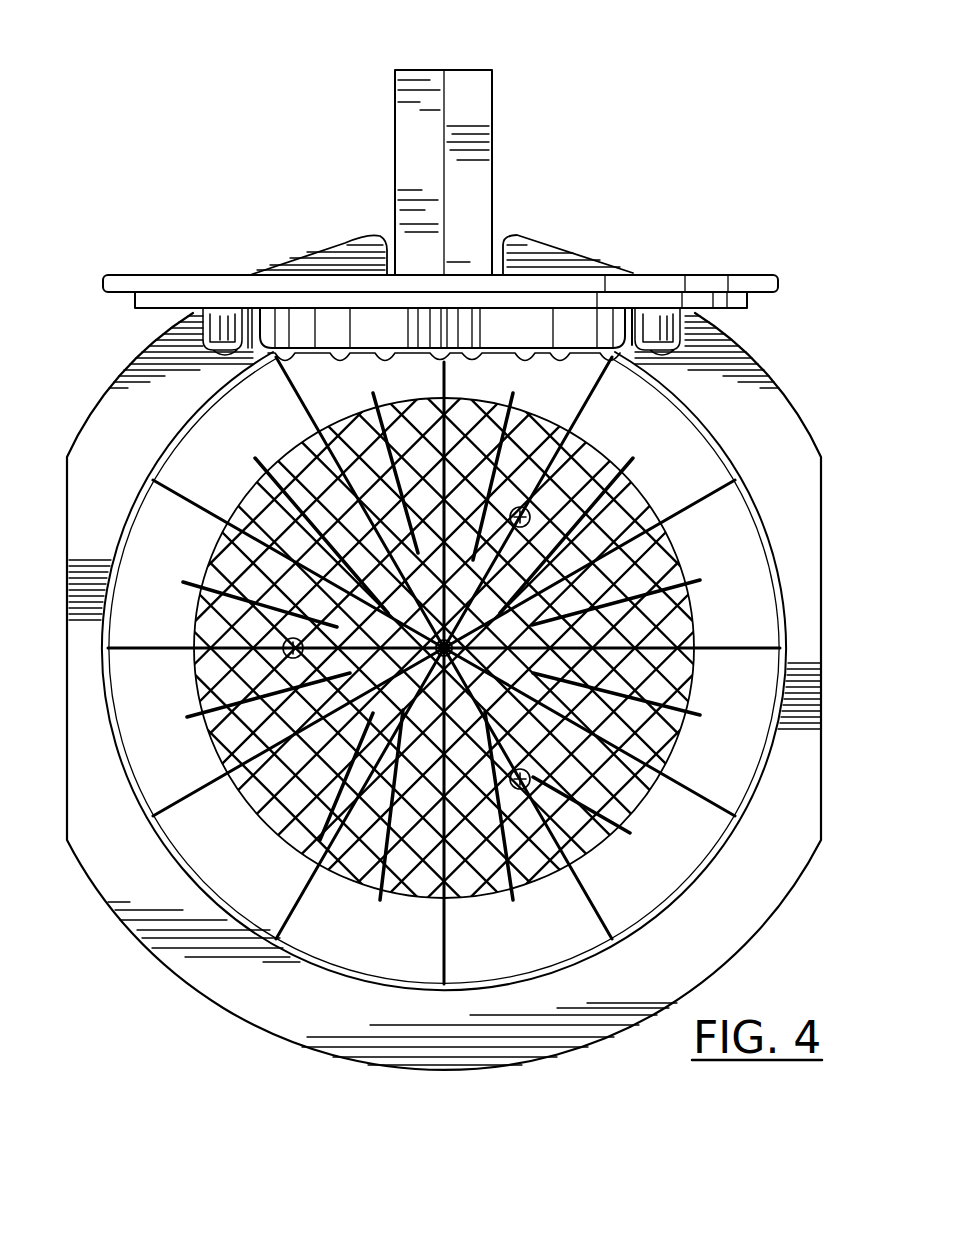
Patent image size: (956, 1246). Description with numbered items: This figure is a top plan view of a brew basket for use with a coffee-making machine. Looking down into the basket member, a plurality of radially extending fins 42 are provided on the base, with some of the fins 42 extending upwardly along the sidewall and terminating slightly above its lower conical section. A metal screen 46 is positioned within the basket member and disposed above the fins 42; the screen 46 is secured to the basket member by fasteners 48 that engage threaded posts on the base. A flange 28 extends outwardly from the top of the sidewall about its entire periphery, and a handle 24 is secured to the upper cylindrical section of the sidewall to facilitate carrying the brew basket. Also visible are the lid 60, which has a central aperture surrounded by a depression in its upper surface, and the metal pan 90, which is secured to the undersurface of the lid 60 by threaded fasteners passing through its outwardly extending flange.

The handle 24 is at (468, 88).
The flange 28 is at (802, 472).
The fins 42 is at (588, 876).
The metal screen 46 is at (584, 462).
The fasteners 48 is at (196, 698).
The lid 60 is at (744, 243).
The metal pan 90 is at (528, 318).